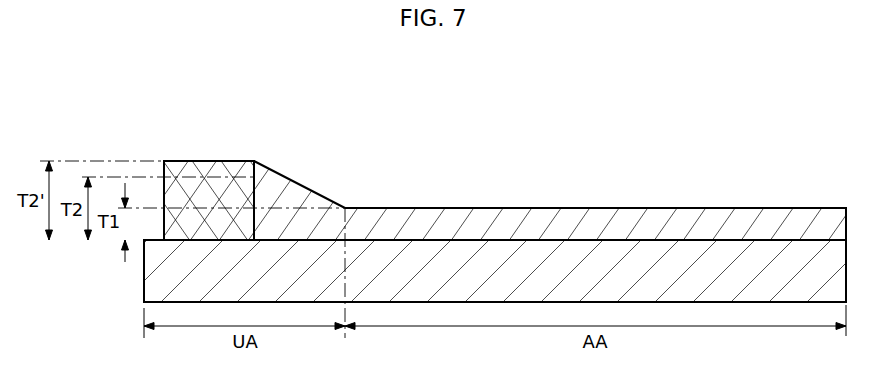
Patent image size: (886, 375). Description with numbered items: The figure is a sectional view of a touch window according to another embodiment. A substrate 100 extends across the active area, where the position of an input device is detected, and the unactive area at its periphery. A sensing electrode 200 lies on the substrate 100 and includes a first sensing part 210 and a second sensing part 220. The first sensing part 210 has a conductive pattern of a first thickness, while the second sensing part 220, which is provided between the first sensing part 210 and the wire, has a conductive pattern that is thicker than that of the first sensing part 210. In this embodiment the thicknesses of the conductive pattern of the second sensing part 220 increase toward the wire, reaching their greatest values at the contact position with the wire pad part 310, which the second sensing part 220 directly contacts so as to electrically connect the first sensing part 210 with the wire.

The substrate 100 is at (720, 250).
The sensing electrode 200 is at (493, 162).
The first sensing part 210 is at (393, 217).
The second sensing part 220 is at (410, 110).
The wire pad part 310 is at (214, 165).